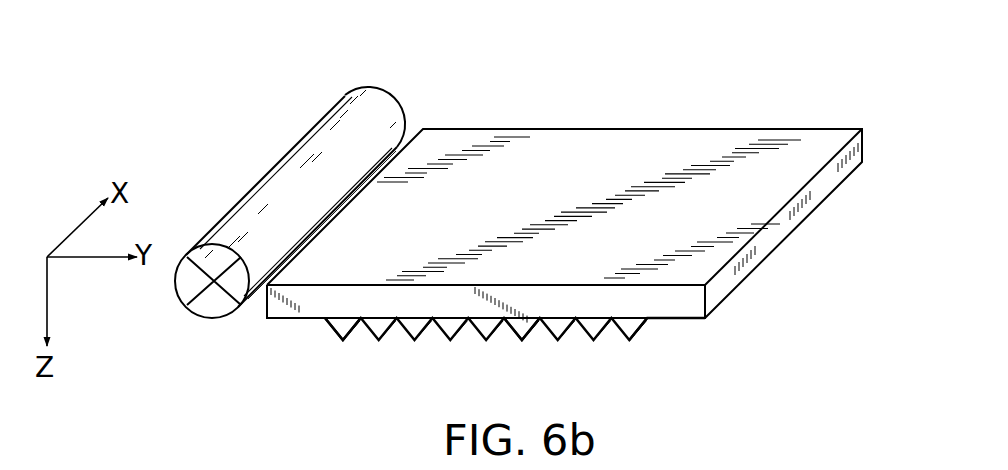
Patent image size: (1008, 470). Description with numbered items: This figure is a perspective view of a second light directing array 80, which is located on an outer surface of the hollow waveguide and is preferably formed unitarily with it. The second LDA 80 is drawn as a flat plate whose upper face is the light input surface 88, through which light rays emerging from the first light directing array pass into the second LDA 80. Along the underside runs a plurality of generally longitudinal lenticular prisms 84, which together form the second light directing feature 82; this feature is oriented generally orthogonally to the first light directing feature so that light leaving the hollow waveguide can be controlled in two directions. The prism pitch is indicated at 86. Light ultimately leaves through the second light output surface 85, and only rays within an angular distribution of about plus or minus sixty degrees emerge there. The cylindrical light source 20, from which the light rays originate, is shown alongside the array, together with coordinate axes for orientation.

The light source 20 is at (335, 152).
The second light directing array 80 is at (578, 186).
The second light directing feature 82 is at (437, 337).
The lenticular prisms 84 is at (523, 341).
The second light output surface 85 is at (650, 330).
The tooth pitch 86 is at (325, 318).
The light input surface 88 is at (600, 147).